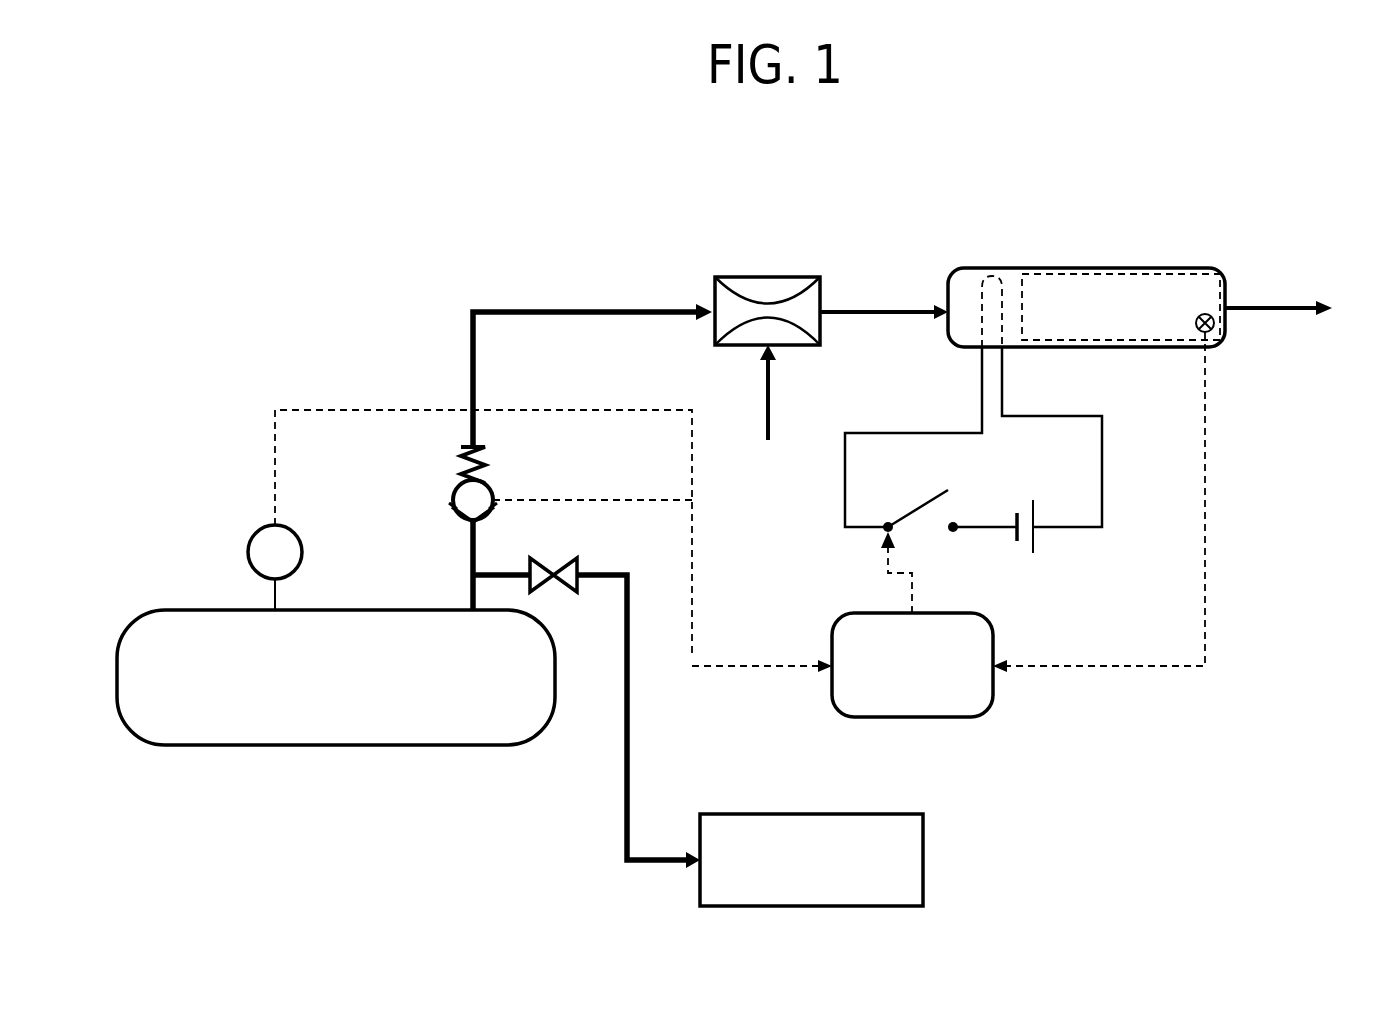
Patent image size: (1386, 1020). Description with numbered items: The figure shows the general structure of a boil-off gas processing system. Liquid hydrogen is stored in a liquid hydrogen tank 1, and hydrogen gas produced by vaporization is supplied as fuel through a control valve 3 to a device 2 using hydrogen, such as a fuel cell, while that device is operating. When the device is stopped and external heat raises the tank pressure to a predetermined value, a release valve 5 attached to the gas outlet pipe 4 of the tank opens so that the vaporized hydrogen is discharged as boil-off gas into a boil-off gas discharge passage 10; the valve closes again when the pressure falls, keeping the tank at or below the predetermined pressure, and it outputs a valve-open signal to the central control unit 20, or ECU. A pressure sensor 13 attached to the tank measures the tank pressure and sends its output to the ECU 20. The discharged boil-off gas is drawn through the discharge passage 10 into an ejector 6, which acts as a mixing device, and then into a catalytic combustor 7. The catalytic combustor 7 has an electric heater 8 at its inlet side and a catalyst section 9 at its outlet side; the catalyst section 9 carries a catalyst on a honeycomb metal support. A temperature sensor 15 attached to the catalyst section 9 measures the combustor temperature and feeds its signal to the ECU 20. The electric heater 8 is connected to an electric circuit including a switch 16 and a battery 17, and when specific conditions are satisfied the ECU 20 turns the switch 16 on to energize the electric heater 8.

The liquid hydrogen tank 1 is at (197, 608).
The device using hydrogen 2 is at (925, 857).
The control valve 3 is at (573, 565).
The gas outlet pipe 4 is at (470, 550).
The release valve 5 is at (452, 498).
The ejector 6 is at (792, 277).
The catalytic combustor 7 is at (1152, 348).
The electric heater 8 is at (970, 268).
The catalyst section 9 is at (1157, 272).
The boil-off gas discharge passage 10 is at (533, 310).
The pressure sensor 13 is at (297, 530).
The temperature sensor 15 is at (1212, 330).
The switch 16 is at (918, 500).
The battery 17 is at (1040, 545).
The central control unit 20 is at (915, 718).